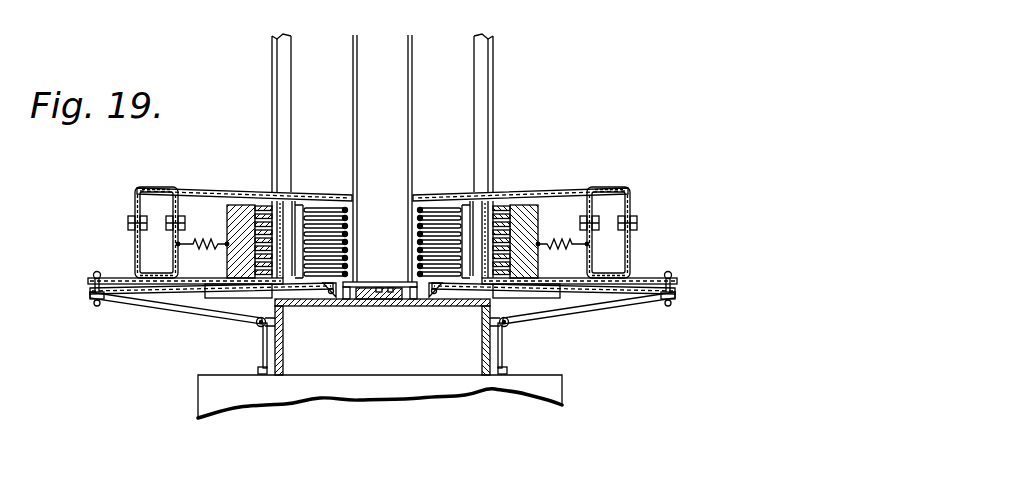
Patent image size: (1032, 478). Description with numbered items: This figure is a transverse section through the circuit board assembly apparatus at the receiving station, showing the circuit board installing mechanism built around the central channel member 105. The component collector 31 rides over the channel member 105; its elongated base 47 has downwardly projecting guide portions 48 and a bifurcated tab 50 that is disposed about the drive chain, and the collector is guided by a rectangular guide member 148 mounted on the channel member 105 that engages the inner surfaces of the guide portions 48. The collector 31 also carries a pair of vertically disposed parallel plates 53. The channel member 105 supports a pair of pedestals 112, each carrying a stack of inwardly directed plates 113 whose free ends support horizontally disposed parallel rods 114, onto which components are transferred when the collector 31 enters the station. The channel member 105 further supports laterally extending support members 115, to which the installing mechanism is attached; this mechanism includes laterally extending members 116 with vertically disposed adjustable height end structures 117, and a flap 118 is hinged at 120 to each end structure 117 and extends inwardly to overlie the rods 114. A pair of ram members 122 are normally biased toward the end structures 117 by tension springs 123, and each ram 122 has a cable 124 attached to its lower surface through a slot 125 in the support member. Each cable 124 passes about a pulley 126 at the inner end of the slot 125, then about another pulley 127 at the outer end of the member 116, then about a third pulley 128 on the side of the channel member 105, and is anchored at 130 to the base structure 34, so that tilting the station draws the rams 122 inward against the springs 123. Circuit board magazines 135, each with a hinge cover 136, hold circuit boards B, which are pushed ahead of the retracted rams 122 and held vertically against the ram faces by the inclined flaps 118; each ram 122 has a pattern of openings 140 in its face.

The collector 31 is at (414, 136).
The base structure 34 is at (550, 378).
The base 47 is at (397, 290).
The guide portions 48 is at (414, 301).
The bifurcated tab 50 is at (375, 292).
The plates 53 is at (355, 153).
The channel member 105 is at (498, 347).
The pedestals 112 is at (300, 198).
The plates 113 is at (340, 205).
The rods 114 is at (416, 242).
The support members 115 is at (218, 307).
The members 116 is at (118, 278).
The end structures 117 is at (131, 226).
The flap 118 is at (216, 191).
The hinge 120 is at (183, 187).
The ram members 122 is at (240, 205).
The tension springs 123 is at (208, 243).
The cable 124 is at (304, 292).
The slot 125 is at (225, 285).
The pulley 126 is at (328, 297).
The pulley 127 is at (94, 298).
The pulley 128 is at (258, 325).
The anchor 130 is at (267, 372).
The circuit board magazines 135 is at (285, 78).
The hinge cover 136 is at (272, 77).
The openings 140 is at (258, 210).
The rectangular guide member 148 is at (387, 292).
The circuit boards B is at (288, 212).